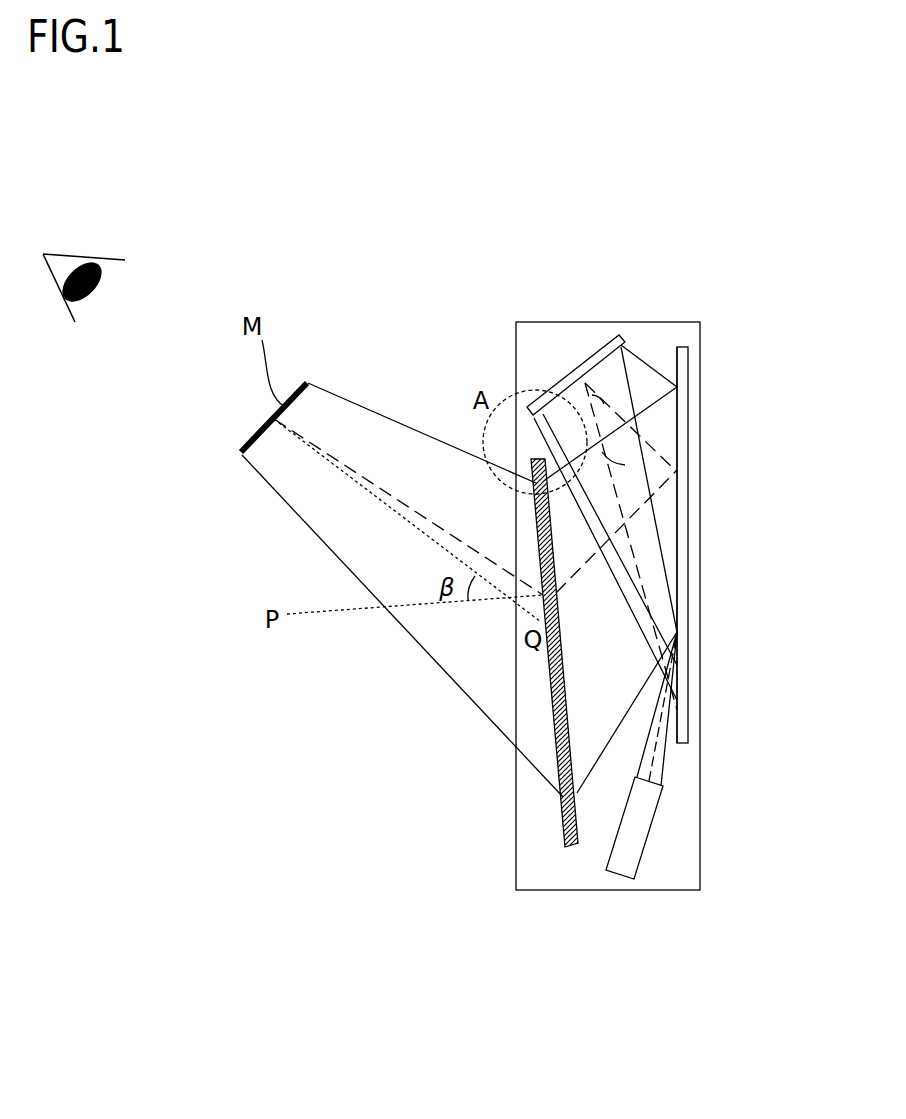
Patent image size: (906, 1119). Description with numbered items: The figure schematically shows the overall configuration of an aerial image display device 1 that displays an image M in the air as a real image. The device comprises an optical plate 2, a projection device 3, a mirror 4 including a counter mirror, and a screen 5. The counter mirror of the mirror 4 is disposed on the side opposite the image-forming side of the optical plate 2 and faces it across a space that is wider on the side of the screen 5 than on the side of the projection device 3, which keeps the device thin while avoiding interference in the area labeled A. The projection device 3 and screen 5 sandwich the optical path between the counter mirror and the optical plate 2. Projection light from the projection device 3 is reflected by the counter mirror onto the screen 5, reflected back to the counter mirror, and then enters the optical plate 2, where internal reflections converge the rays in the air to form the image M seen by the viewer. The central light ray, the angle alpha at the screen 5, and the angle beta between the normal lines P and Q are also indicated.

The aerial image display device 1 is at (661, 322).
The optical plate 2 is at (566, 848).
The projection device 3 is at (644, 852).
The mirror 4 is at (738, 545).
The screen 5 is at (557, 373).